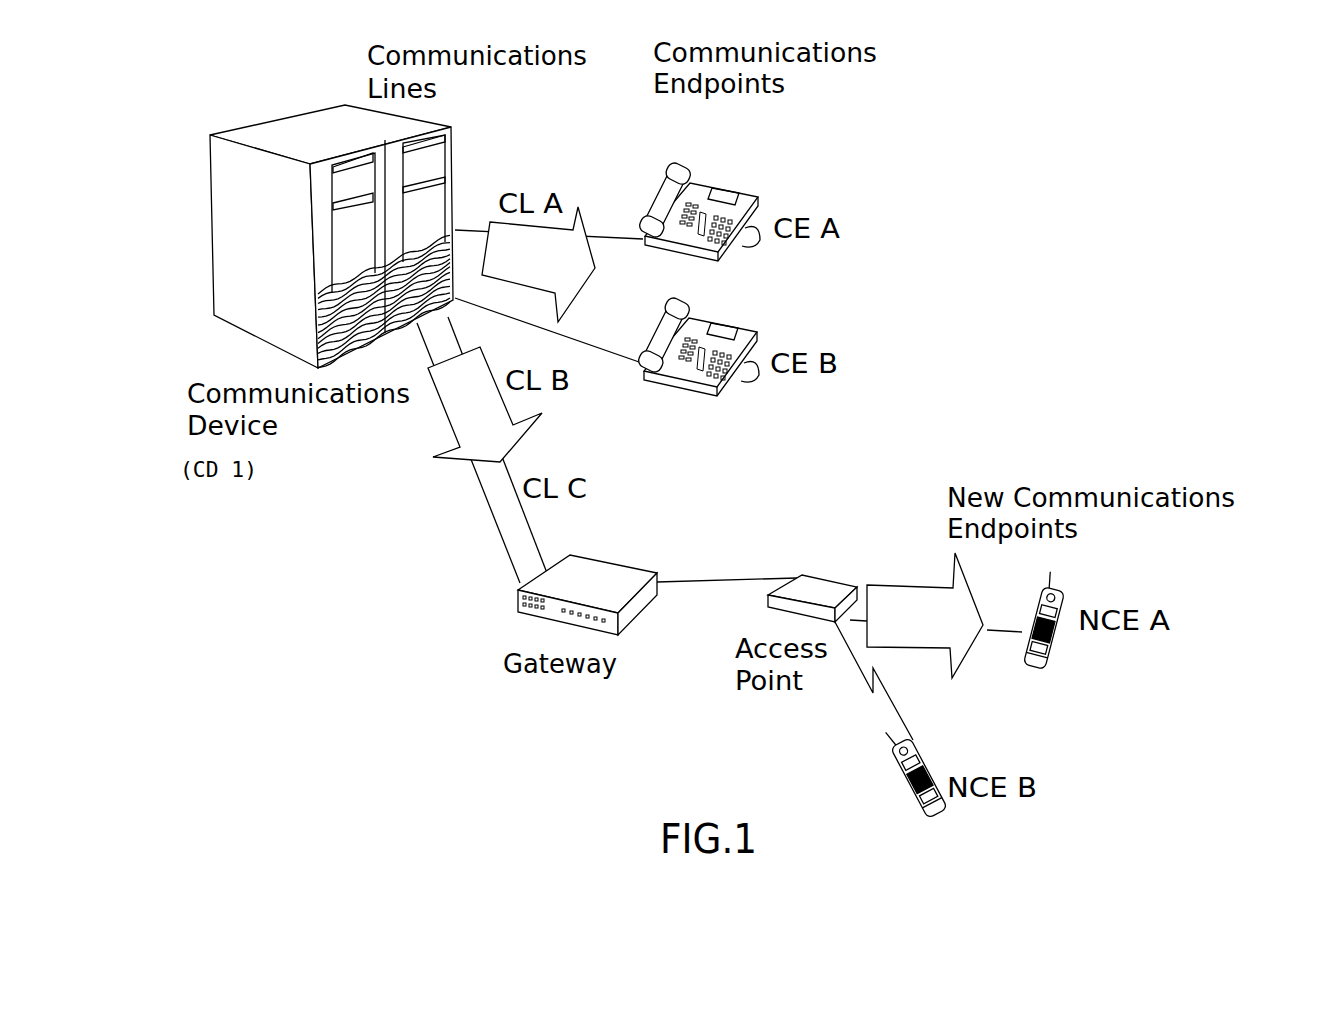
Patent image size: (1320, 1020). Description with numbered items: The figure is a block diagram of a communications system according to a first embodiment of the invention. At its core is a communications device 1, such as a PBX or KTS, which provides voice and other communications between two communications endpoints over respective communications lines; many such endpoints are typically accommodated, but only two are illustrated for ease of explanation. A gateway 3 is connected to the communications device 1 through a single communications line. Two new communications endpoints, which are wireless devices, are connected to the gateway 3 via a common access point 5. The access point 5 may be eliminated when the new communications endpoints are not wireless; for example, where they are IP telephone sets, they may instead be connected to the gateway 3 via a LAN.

The communications device 1 is at (252, 113).
The gateway 3 is at (640, 568).
The access point 5 is at (813, 575).